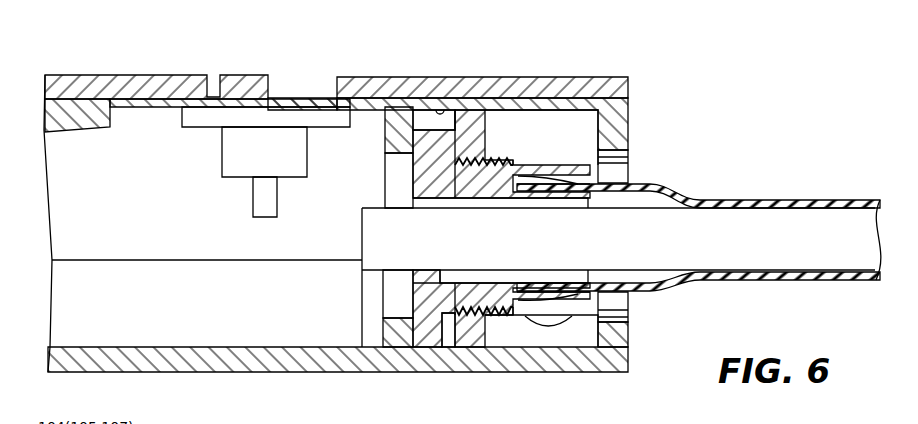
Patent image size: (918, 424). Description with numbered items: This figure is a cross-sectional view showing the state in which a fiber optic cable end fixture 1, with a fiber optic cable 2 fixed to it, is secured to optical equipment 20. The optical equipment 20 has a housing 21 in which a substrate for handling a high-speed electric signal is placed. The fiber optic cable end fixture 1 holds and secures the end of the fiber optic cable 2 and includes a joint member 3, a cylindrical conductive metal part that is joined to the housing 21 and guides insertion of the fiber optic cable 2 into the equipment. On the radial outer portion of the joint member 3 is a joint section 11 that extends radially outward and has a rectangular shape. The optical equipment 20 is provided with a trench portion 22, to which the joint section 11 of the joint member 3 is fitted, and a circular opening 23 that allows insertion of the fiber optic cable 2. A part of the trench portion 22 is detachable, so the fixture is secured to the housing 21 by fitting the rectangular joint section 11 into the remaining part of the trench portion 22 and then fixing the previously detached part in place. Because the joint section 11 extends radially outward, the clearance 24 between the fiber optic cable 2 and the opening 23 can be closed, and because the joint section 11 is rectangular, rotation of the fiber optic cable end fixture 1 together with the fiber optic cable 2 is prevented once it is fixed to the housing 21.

The fiber optic cable end fixture 1 is at (609, 228).
The fiber optic cable 2 is at (778, 199).
The joint member 3 is at (470, 340).
The joint section 11 is at (423, 340).
The optical equipment 20 is at (122, 71).
The housing 21 is at (408, 102).
The trench portion 22 is at (445, 112).
The circular opening 23 is at (395, 167).
The clearance 24 is at (485, 158).